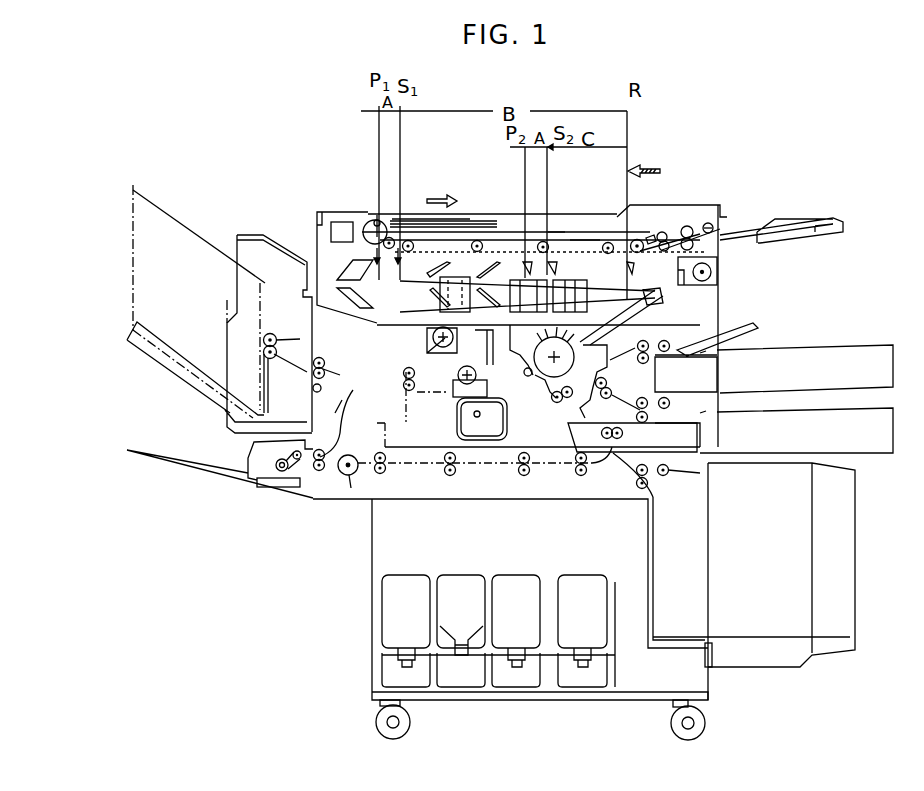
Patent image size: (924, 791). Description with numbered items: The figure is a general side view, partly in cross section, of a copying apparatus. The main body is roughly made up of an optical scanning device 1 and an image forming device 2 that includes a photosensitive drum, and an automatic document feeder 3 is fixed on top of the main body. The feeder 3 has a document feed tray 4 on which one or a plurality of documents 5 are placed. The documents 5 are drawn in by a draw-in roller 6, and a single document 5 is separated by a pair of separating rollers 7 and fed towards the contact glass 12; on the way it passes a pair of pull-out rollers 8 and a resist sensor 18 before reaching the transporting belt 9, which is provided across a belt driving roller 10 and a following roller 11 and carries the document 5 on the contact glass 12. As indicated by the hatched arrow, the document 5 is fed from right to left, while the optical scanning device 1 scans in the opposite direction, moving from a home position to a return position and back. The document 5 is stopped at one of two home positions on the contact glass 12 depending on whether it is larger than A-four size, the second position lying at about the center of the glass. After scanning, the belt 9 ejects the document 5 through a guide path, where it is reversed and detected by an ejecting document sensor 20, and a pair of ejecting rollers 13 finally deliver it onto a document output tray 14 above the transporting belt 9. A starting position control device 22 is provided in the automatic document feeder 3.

The optical scanning device 1 is at (676, 307).
The image forming device 2 is at (620, 337).
The automatic document feeder 3 is at (318, 217).
The document feed tray 4 is at (740, 238).
The document 5 is at (768, 227).
The draw-in roller 6 is at (713, 226).
The separating rollers 7 is at (691, 228).
The pull-out rollers 8 is at (660, 233).
The transporting belt 9 is at (580, 240).
The belt driving roller 10 is at (634, 242).
The following roller 11 is at (389, 220).
The contact glass 12 is at (556, 243).
The ejecting rollers 13 is at (375, 214).
The document output tray 14 is at (506, 228).
The resist sensor 18 is at (650, 236).
The ejecting document sensor 20 is at (365, 224).
The starting position control device 22 is at (337, 222).